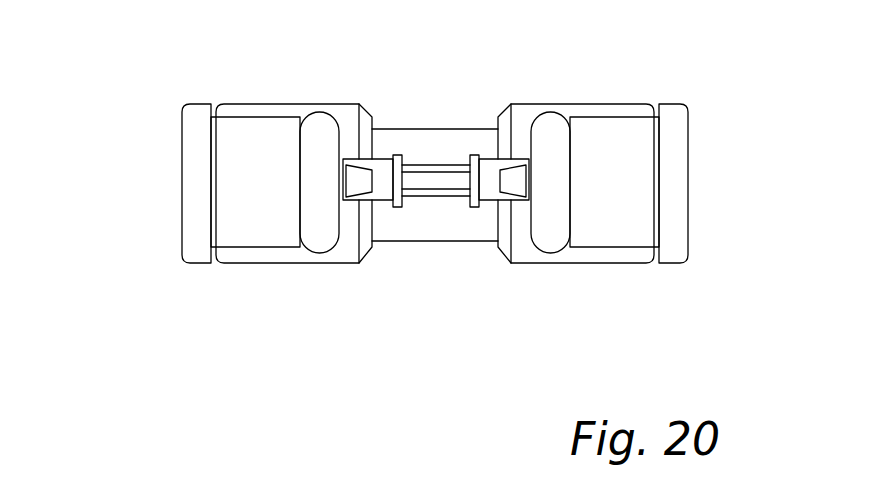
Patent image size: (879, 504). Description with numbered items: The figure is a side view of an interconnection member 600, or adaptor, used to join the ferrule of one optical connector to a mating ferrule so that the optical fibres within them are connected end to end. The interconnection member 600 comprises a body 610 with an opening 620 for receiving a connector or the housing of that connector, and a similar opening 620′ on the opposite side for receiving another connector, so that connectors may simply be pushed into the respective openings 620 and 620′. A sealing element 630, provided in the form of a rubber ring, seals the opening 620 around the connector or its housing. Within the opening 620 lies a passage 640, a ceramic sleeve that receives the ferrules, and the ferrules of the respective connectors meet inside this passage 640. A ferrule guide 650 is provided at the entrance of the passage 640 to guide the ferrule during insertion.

The interconnection member 600 is at (434, 206).
The body 610 is at (262, 106).
The opening 620 is at (183, 172).
The opening 620′ is at (688, 166).
The sealing element 630 is at (318, 254).
The passage 640 is at (438, 178).
The ferrule guide 650 is at (382, 195).